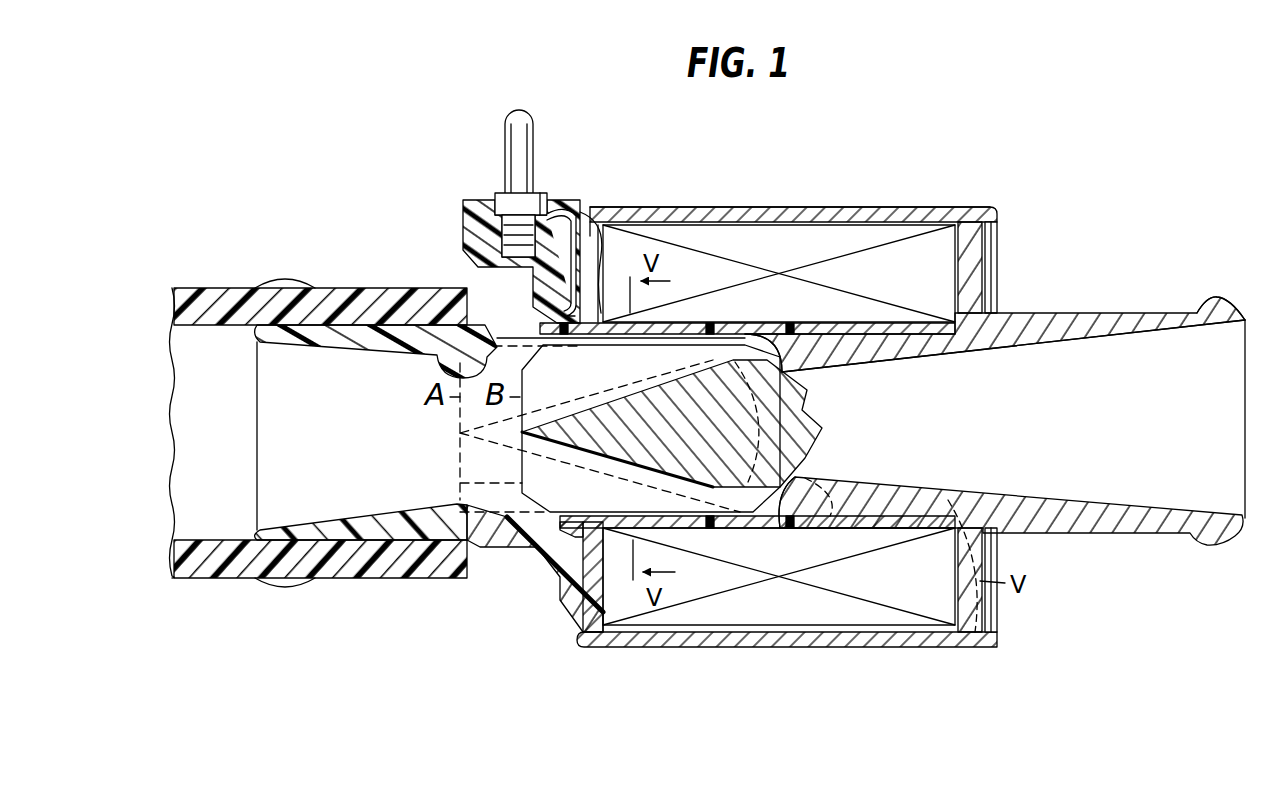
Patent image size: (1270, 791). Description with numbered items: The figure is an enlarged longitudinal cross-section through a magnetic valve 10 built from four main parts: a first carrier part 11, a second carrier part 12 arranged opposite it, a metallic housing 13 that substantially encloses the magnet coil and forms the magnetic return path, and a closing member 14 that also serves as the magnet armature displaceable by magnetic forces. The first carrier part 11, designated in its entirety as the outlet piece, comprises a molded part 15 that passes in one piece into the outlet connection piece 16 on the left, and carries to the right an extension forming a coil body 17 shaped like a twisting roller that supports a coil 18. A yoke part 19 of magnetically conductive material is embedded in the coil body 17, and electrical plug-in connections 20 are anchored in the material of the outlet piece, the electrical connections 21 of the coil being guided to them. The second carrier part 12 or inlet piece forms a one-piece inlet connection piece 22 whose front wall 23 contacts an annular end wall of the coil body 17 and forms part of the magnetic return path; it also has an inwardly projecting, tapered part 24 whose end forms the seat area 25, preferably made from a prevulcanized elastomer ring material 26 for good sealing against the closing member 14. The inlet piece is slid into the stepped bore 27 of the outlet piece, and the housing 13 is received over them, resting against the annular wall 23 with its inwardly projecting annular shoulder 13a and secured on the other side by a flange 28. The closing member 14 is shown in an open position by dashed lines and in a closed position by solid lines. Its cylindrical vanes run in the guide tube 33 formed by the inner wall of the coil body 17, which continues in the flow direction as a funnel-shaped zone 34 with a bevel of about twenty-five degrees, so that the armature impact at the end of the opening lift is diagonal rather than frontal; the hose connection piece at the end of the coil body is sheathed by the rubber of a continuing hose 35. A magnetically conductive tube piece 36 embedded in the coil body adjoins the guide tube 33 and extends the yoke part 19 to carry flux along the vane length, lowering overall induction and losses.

The magnetic valve 10 is at (869, 204).
The first carrier part 11 is at (524, 282).
The second carrier part 12 is at (1062, 304).
The metallic housing 13 is at (787, 210).
The inwardly projecting annular shoulder 13a is at (995, 277).
The closing member 14 is at (583, 448).
The molded part 15 is at (503, 548).
The outlet connection piece 16 is at (378, 547).
The coil body 17 is at (800, 325).
The coil 18 is at (715, 228).
The yoke part 19 is at (688, 325).
The electrical plug-in connections 20 is at (549, 192).
The electrical connections 21 is at (594, 240).
The inlet connection piece 22 is at (1162, 312).
The front wall 23 is at (976, 240).
The inwardly projecting part 24 is at (917, 355).
The seat area 25 is at (815, 370).
The prevulcanized elastomer ring material 26 is at (822, 520).
The stepped bore 27 is at (835, 502).
The flange 28 is at (568, 650).
The guide tube 33 is at (622, 350).
The funnel-shaped zone 34 is at (437, 313).
The hose 35 is at (328, 297).
The magnetically conductive tube piece 36 is at (513, 313).